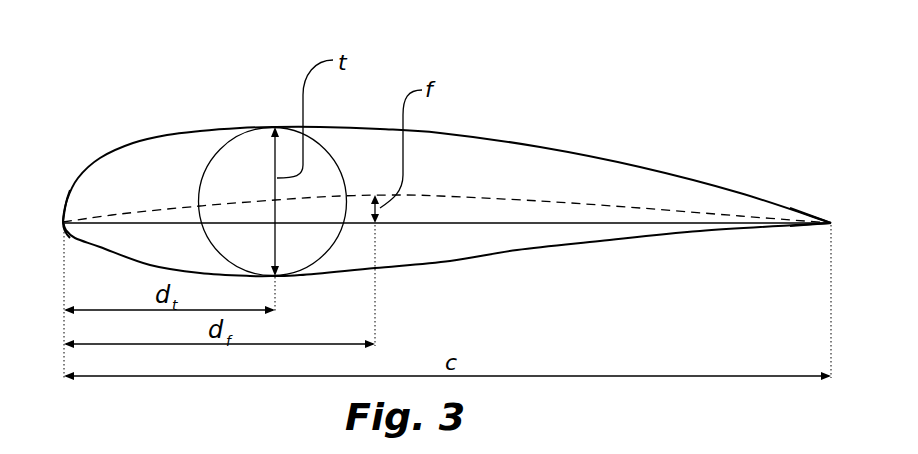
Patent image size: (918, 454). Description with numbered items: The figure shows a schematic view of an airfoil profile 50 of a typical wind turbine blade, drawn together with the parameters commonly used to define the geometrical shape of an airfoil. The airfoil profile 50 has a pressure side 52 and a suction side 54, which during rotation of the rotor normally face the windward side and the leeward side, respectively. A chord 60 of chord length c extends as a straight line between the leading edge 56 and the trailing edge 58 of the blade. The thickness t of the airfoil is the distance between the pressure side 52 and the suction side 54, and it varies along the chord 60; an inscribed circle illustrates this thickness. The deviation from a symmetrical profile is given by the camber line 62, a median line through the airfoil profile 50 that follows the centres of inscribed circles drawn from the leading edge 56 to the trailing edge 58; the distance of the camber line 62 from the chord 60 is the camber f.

The airfoil profile 50 is at (423, 54).
The pressure side 52 is at (598, 250).
The suction side 54 is at (541, 147).
The leading edge 56 is at (63, 222).
The trailing edge 58 is at (831, 223).
The chord 60 is at (635, 223).
The camber line 62 is at (437, 196).